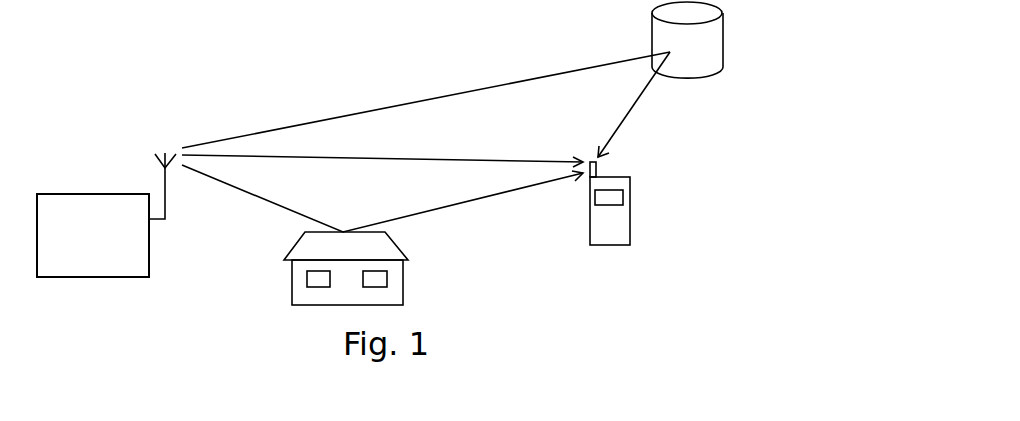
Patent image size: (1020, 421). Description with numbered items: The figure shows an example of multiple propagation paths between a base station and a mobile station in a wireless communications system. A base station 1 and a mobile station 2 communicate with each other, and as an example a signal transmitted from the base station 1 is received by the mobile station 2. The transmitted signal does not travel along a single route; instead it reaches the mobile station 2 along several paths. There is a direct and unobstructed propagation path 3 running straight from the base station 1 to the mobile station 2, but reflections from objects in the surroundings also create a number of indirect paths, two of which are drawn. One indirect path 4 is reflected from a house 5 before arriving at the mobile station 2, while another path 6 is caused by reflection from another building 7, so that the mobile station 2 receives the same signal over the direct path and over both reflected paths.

The base station 1 is at (98, 194).
The mobile station 2 is at (630, 222).
The direct and unobstructed propagation path 3 is at (447, 156).
The indirect path 4 is at (453, 205).
The house 5 is at (405, 268).
The path 6 is at (502, 83).
The building 7 is at (680, 78).